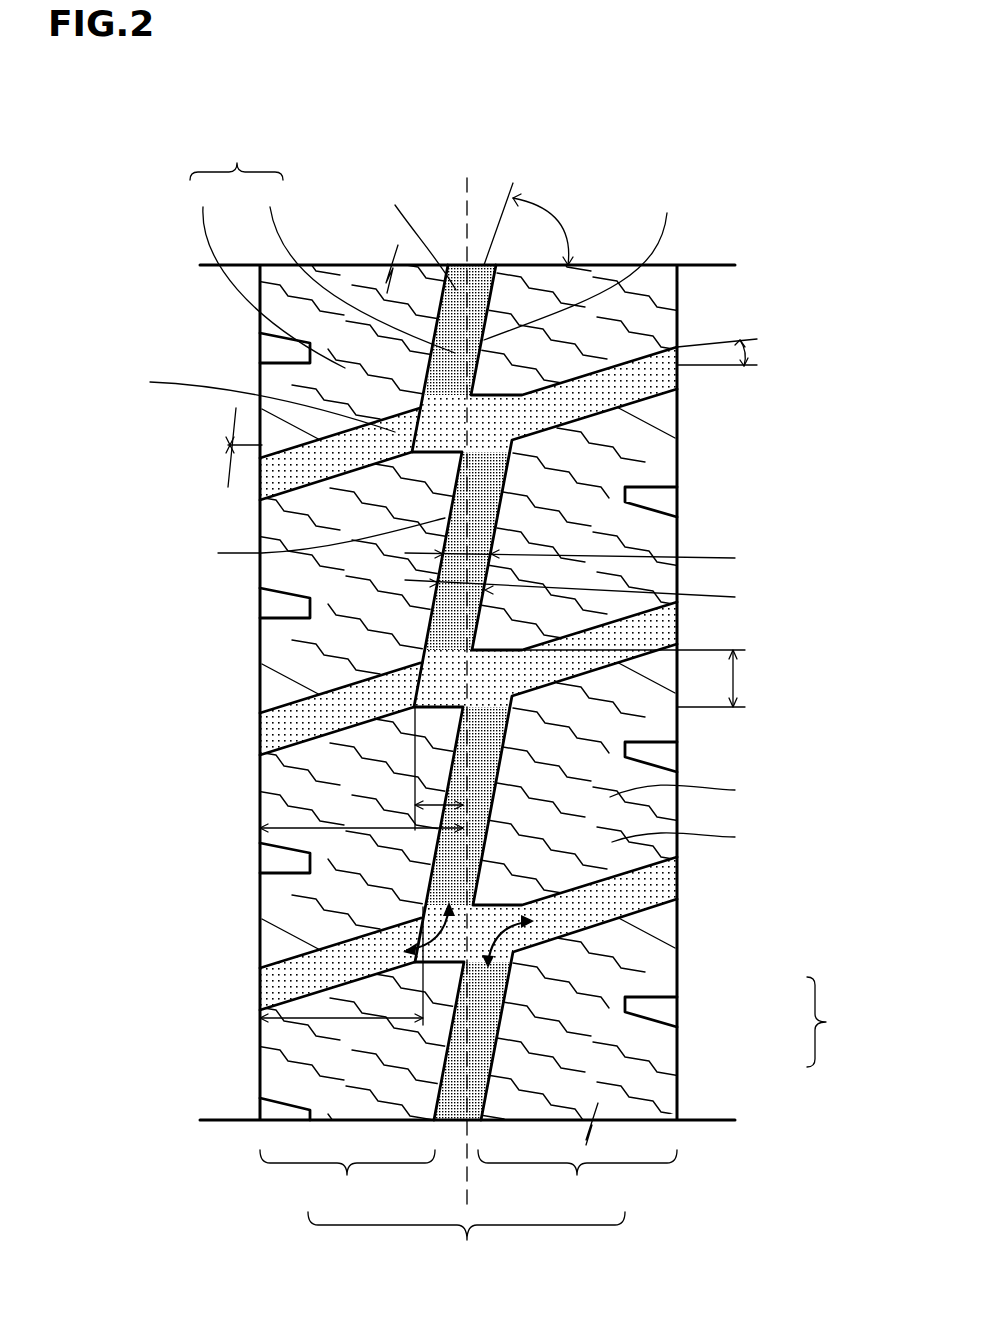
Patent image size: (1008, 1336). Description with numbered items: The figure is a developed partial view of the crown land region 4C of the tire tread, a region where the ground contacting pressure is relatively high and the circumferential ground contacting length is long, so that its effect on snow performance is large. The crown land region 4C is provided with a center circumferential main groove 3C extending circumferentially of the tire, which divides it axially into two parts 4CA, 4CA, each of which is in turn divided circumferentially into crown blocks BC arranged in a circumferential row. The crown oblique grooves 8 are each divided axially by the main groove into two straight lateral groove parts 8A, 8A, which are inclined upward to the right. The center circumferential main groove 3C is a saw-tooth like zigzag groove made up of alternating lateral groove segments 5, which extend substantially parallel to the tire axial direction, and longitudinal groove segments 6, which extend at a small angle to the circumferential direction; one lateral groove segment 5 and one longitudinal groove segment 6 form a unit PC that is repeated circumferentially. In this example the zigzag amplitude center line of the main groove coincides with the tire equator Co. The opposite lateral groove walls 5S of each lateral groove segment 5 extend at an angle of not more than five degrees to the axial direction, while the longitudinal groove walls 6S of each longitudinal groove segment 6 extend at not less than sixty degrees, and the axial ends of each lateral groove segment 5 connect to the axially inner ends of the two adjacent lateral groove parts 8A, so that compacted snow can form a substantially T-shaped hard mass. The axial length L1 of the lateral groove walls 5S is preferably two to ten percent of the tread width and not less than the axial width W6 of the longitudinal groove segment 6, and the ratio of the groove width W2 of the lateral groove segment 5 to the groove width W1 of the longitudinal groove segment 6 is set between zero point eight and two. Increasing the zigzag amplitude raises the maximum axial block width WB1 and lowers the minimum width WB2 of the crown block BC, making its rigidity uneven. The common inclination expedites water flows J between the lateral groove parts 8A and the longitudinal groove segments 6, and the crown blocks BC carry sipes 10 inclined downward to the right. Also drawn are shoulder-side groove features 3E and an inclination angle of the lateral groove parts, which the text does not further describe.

The center circumferential main groove 3C is at (478, 287).
The tire equator Co is at (468, 678).
The unit PC is at (236, 156).
The lateral groove segment 5 is at (268, 272).
The longitudinal groove segment 6 is at (357, 265).
The longitudinal groove walls 6S is at (525, 257).
The shoulder lateral groove 3E is at (242, 361).
The lateral groove walls 5S is at (276, 466).
The lateral groove part 8A is at (276, 486).
The crown block BC is at (612, 508).
The width W6 is at (594, 557).
The groove width W1 is at (594, 596).
The groove width W2 is at (658, 678).
The length L1 is at (407, 815).
The sipes 10 is at (691, 814).
The water flows J is at (423, 913).
The maximum axial width of the crown block WB1 is at (330, 832).
The minimum axial width of the crown block WB2 is at (338, 1020).
The crown oblique groove 8 is at (829, 1022).
The part of the crown land region 4CA is at (468, 1183).
The crown land region 4C is at (466, 1246).